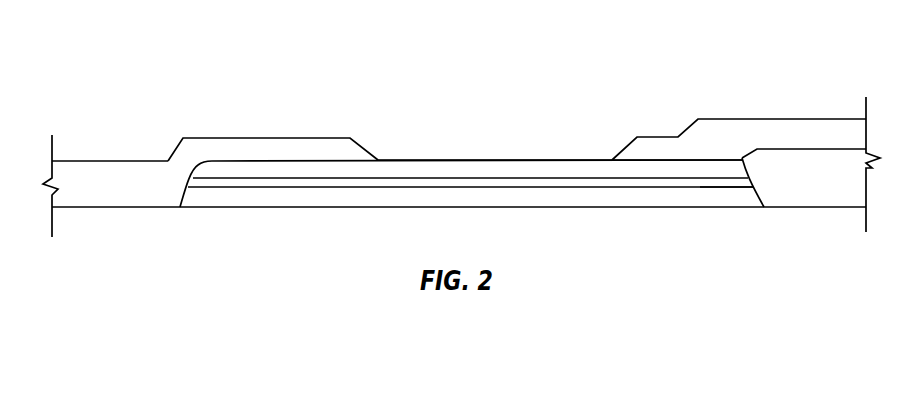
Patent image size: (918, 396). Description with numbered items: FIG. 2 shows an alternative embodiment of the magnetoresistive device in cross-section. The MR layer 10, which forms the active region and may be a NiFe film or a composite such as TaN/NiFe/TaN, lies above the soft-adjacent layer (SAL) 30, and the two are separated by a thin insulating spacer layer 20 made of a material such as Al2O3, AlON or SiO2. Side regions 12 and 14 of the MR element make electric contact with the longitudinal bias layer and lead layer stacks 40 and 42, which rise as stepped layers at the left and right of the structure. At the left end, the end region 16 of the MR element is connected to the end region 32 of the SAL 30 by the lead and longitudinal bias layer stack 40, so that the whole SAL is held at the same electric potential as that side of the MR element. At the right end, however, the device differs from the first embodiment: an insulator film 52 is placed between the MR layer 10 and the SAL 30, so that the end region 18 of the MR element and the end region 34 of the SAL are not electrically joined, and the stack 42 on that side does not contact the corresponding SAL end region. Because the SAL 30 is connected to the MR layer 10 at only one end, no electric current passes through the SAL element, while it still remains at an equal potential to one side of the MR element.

The MR layer 10 is at (481, 167).
The side region of the MR element 12 is at (308, 167).
The side region of the MR element 14 is at (589, 166).
The end region of the MR element 16 is at (212, 170).
The end region of the MR element 18 is at (727, 169).
The insulating spacer layer 20 is at (539, 182).
The soft-adjacent layer (SAL) 30 is at (364, 203).
The end region of the SAL 32 is at (200, 198).
The end region of the SAL 34 is at (732, 198).
The longitudinal bias layer and lead layer stack 40 is at (123, 203).
The longitudinal bias layer and lead layer stack 42 is at (803, 135).
The insulator film 52 is at (778, 207).